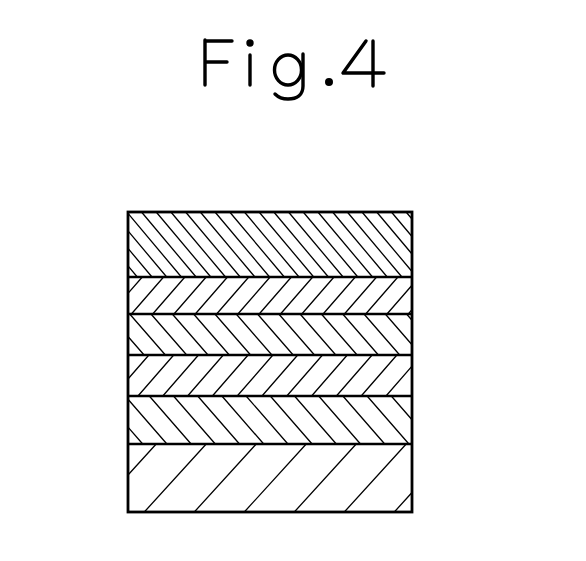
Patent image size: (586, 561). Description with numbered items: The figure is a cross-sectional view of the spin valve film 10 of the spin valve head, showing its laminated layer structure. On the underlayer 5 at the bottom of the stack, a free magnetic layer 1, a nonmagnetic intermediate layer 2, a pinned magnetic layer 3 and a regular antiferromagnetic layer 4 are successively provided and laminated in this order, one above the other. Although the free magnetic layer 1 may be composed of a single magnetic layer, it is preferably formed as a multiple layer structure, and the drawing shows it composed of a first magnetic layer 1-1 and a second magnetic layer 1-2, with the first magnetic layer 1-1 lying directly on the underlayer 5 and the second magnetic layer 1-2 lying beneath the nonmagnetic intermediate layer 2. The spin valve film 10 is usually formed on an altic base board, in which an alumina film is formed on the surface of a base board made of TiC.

The spin valve film 10 is at (110, 215).
The regular antiferromagnetic layer 4 is at (394, 245).
The pinned magnetic layer 3 is at (394, 296).
The nonmagnetic intermediate layer 2 is at (394, 332).
The free magnetic layer 1 is at (288, 399).
The second magnetic layer 1-2 is at (388, 375).
The first magnetic layer 1-1 is at (387, 421).
The underlayer 5 is at (394, 477).